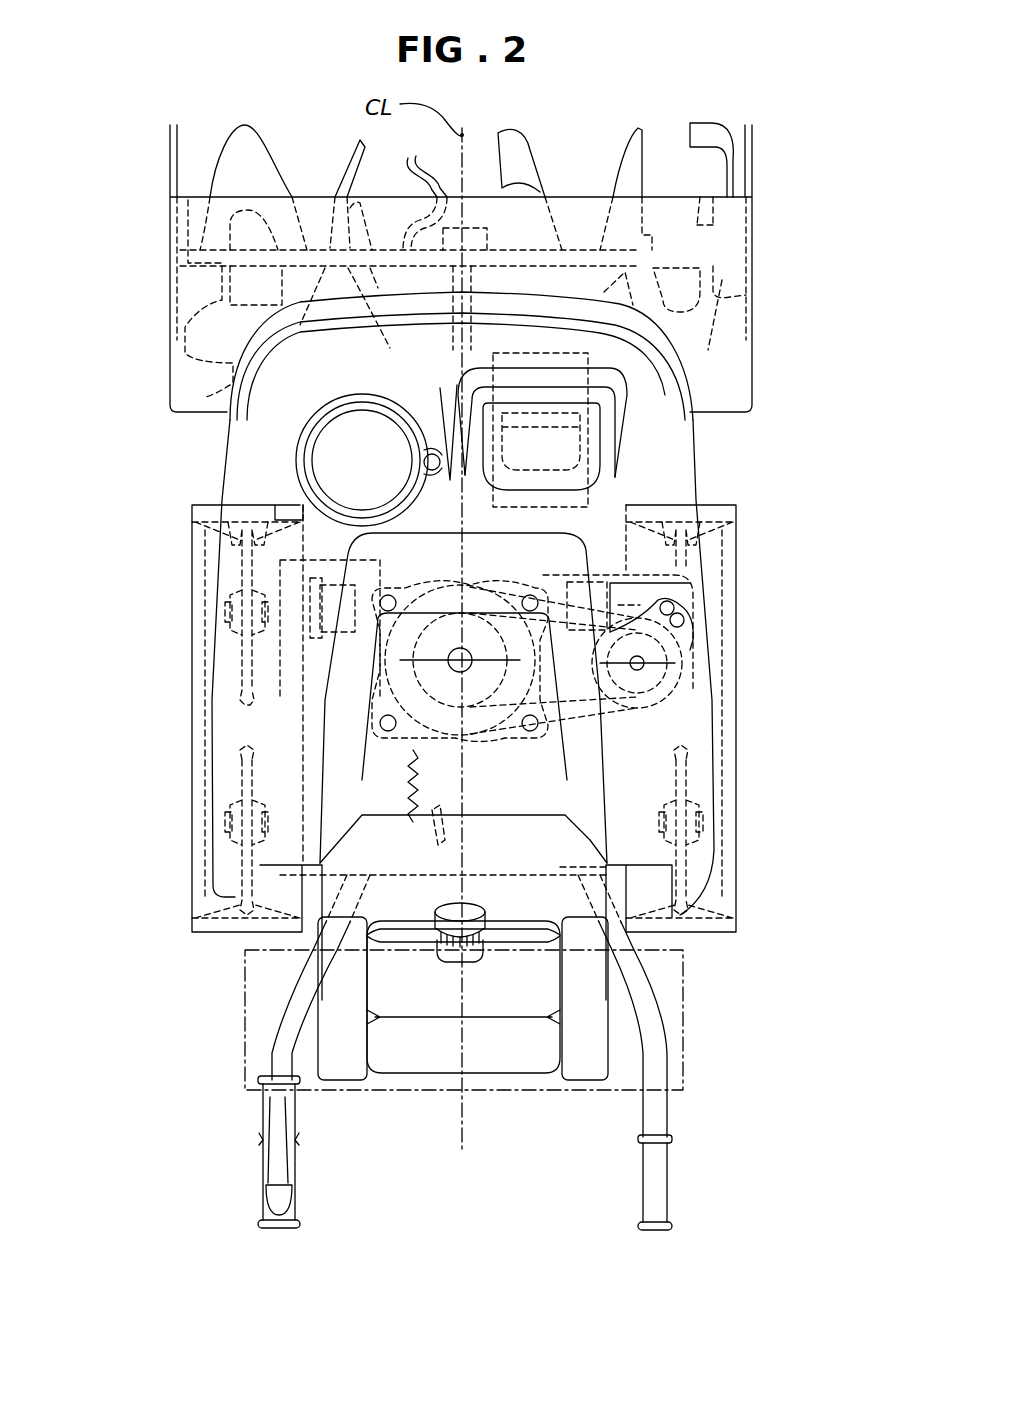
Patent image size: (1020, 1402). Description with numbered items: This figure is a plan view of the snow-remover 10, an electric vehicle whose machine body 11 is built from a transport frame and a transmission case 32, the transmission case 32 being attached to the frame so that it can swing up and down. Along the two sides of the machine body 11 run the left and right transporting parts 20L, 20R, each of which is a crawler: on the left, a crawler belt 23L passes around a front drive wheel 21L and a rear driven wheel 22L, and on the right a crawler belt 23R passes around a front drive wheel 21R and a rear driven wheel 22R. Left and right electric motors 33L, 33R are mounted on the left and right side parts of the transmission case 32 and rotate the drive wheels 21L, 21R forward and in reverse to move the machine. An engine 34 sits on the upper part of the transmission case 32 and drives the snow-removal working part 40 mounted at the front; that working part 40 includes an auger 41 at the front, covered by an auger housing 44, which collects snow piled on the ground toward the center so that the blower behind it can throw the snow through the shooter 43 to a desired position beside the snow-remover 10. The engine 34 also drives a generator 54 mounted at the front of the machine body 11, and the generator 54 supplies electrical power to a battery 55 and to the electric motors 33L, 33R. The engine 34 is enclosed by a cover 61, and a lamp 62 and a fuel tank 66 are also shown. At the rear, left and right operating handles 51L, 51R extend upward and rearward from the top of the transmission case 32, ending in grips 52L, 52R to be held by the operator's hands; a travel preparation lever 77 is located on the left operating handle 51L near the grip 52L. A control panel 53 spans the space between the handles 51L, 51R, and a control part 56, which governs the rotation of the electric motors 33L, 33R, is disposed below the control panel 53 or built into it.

The snow-remover 10 is at (100, 437).
The machine body 11 is at (727, 677).
The left transporting part 20L is at (206, 752).
The right transporting part 20R is at (729, 752).
The front drive wheel 21L is at (243, 552).
The front drive wheel 21R is at (680, 548).
The rear driven wheel 22L is at (245, 862).
The rear driven wheel 22R is at (690, 862).
The crawler belt 23L is at (190, 760).
The crawler belt 23R is at (745, 607).
The transmission case 32 is at (375, 568).
The left electric motor 33L is at (343, 648).
The right electric motor 33R is at (598, 577).
The engine 34 is at (395, 677).
The snow-removal working part 40 is at (158, 240).
The auger 41 is at (520, 135).
The shooter 43 is at (296, 457).
The auger housing 44 is at (178, 345).
The left operating handle 51L is at (273, 1052).
The right operating handle 51R is at (660, 1073).
The grip 52L is at (217, 1152).
The grip 52R is at (660, 1195).
The control panel 53 is at (673, 962).
The generator 54 is at (600, 637).
The battery 55 is at (590, 360).
The control part 56 is at (342, 1072).
The cover 61 is at (212, 905).
The lamp 62 is at (580, 450).
The fuel tank 66 is at (583, 1072).
The travel preparation lever 77 is at (265, 1118).